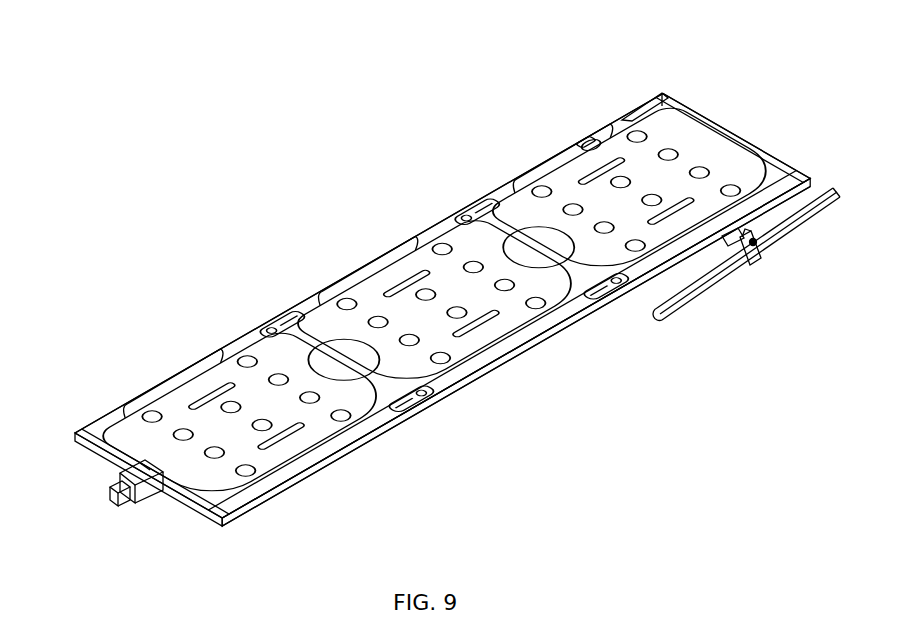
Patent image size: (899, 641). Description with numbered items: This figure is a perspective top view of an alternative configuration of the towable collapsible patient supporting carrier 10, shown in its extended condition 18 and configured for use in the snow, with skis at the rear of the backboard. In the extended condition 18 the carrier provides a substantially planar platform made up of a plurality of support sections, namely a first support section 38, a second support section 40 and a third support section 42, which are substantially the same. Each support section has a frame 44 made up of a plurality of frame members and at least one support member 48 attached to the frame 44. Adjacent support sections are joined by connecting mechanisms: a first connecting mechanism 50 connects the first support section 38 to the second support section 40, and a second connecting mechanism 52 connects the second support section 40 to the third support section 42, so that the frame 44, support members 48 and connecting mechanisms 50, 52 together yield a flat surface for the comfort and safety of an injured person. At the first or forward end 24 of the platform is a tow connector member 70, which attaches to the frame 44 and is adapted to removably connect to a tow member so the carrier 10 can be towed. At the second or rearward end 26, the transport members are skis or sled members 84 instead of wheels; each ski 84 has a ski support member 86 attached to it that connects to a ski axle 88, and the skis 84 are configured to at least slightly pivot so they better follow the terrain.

The patient supporting carrier 10 is at (458, 328).
The extended condition 18 is at (441, 273).
The first or forward end 24 is at (222, 528).
The second or rearward end 26 is at (640, 93).
The first support section 38 is at (173, 383).
The second support section 40 is at (527, 340).
The third support section 42 is at (540, 157).
The frame 44 is at (737, 135).
The support member 48 is at (673, 130).
The first connecting mechanism 50 is at (412, 425).
The second connecting mechanism 52 is at (610, 317).
The tow connector member 70 is at (143, 505).
The skis or sled members 84 is at (795, 225).
The ski support member 86 is at (752, 260).
The ski axles 88 is at (720, 247).